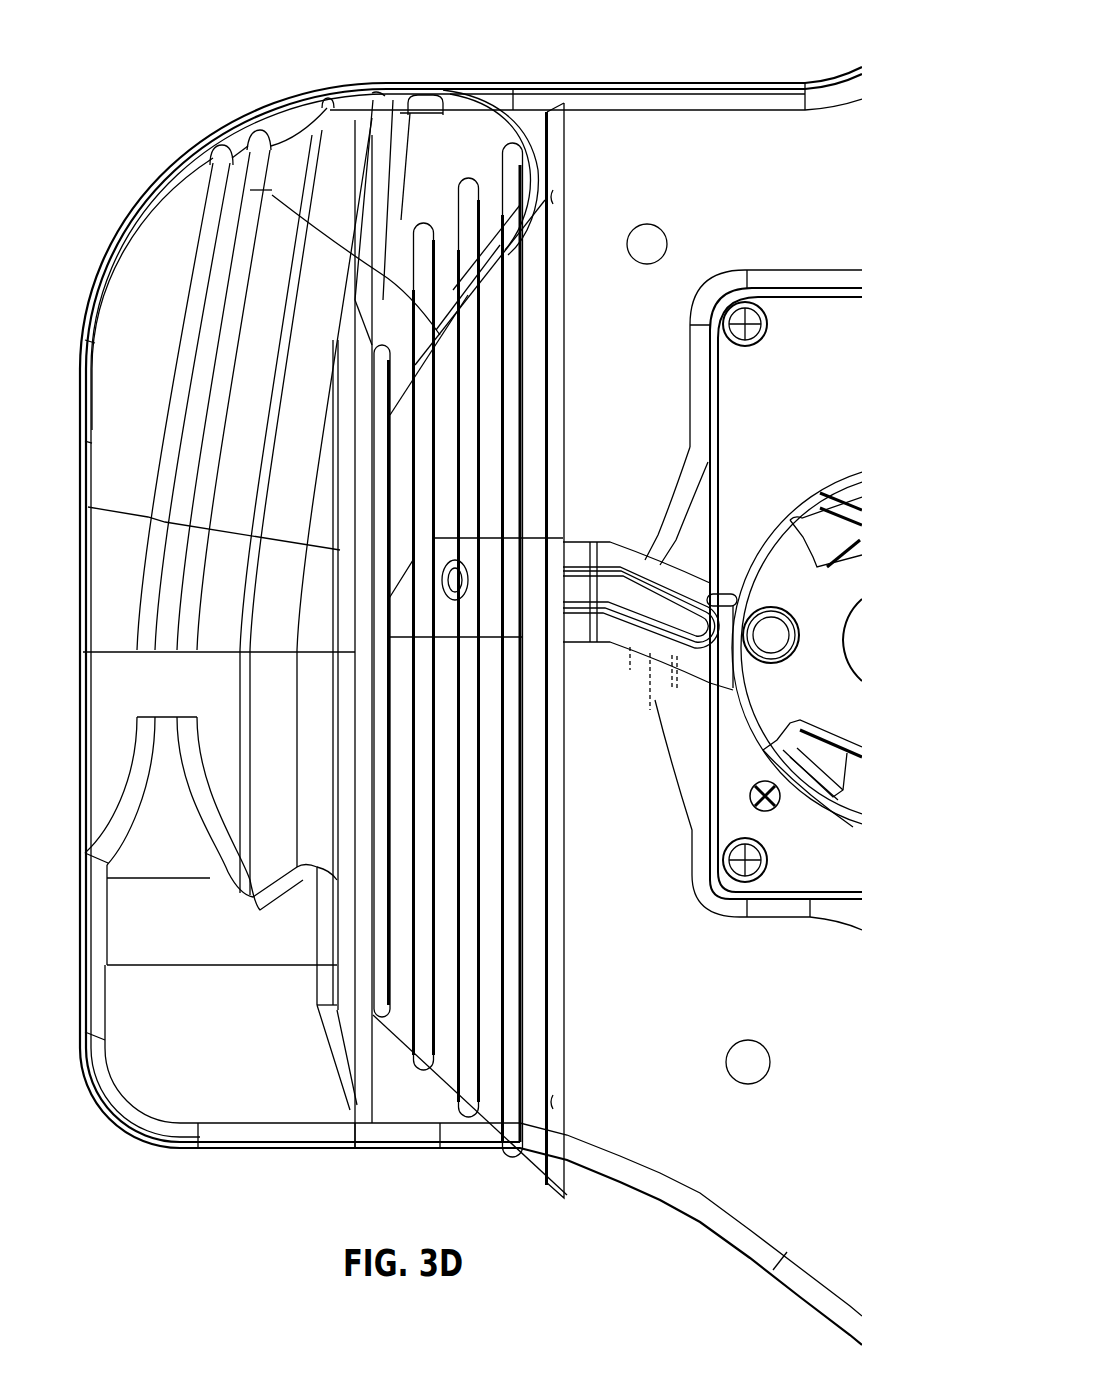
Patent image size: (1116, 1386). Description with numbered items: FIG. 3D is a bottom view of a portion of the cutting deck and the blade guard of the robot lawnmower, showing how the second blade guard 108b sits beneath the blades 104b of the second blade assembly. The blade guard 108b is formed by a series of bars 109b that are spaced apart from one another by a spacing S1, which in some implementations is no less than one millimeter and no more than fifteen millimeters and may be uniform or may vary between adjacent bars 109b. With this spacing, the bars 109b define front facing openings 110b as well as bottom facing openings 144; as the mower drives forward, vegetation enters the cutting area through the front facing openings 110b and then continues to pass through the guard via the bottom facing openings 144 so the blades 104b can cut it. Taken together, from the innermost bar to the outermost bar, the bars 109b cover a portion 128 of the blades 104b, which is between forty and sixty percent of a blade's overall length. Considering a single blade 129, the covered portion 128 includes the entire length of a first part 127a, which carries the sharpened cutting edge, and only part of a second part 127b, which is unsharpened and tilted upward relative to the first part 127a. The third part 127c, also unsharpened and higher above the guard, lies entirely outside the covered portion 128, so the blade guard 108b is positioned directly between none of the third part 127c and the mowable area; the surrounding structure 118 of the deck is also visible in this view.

The second blade guard 108b is at (573, 99).
The front facing openings 110b is at (532, 155).
The mounting panel 118 is at (762, 179).
The bottom facing openings 144 is at (532, 410).
The blades 104b is at (690, 572).
The blade 129 is at (717, 590).
The first part of the blade 127a is at (523, 645).
The second part of the blade 127b is at (525, 532).
The third part of the blade 127c is at (730, 699).
The covered portion of the blades 128 is at (567, 705).
The bars 109b is at (375, 992).
The spacing S1 is at (550, 1208).